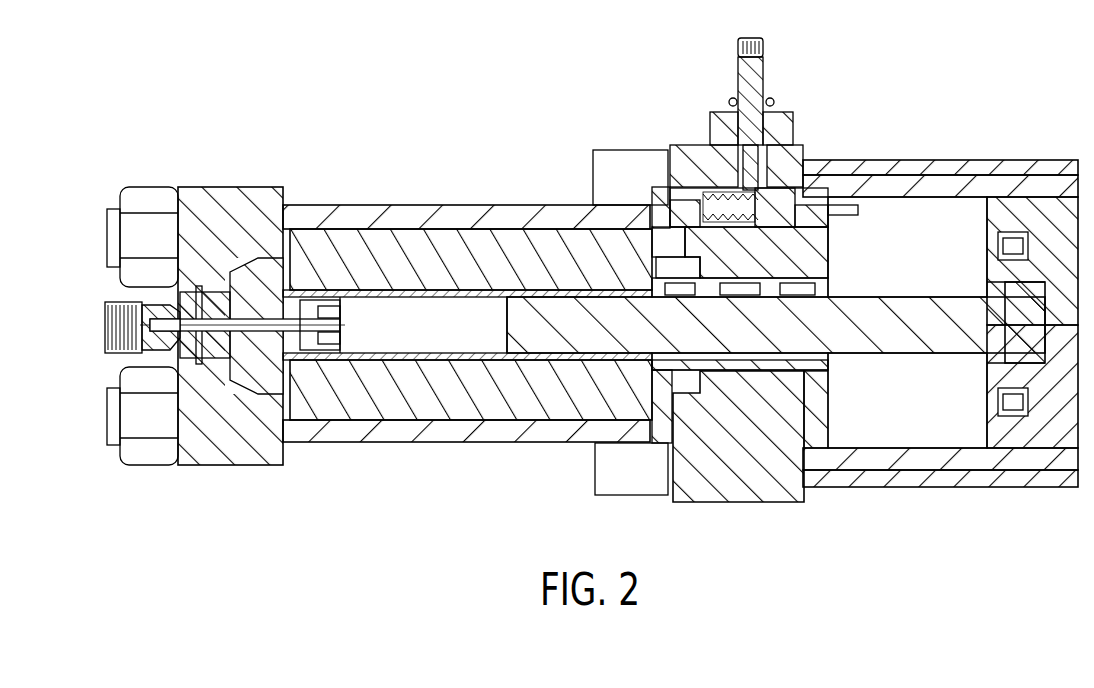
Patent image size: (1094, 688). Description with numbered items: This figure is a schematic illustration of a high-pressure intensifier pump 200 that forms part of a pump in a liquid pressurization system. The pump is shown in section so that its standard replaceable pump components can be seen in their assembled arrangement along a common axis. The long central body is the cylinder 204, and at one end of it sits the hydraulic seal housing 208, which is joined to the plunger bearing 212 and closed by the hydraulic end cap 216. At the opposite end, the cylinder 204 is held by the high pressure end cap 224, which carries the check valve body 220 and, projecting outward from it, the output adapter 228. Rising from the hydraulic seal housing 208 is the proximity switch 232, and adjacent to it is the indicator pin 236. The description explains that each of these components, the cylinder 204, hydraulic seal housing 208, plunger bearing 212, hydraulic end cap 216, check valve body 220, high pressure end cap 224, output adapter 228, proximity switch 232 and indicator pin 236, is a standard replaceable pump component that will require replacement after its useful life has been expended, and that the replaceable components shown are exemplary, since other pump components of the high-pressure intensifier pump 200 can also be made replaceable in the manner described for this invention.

The high-pressure intensifier pump 200 is at (562, 287).
The cylinder 204 is at (400, 400).
The hydraulic seal housing 208 is at (694, 378).
The plunger bearing 212 is at (770, 363).
The hydraulic end cap 216 is at (737, 490).
The check valve body 220 is at (177, 355).
The high pressure end cap 224 is at (228, 202).
The output adapter 228 is at (112, 302).
The proximity switch 232 is at (745, 90).
The indicator pin 236 is at (776, 195).